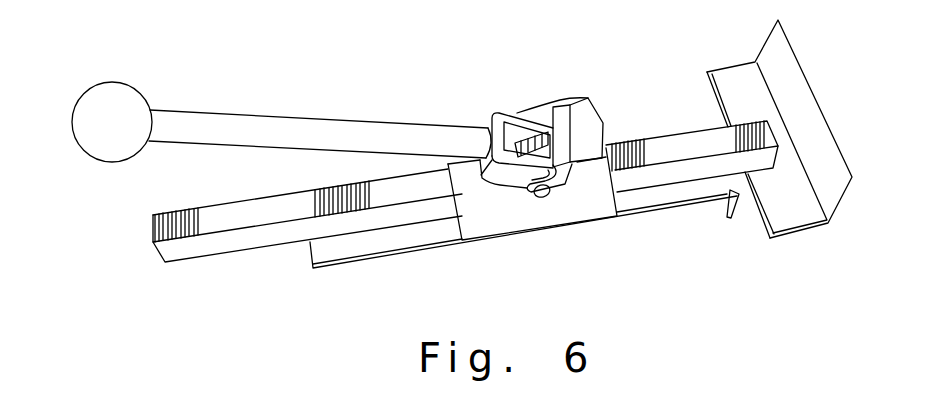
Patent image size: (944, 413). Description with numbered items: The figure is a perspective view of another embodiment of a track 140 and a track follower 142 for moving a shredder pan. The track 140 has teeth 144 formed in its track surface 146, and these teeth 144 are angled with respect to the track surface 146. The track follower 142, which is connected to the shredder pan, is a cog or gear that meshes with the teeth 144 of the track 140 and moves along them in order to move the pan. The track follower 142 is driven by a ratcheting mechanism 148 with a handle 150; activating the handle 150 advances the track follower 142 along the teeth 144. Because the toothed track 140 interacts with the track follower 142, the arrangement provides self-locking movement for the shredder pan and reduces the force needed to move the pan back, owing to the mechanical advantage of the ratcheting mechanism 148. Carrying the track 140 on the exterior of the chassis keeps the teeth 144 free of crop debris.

The track 140 is at (462, 193).
The track follower 142 is at (560, 133).
The teeth 144 is at (318, 192).
The track surface 146 is at (378, 213).
The ratcheting mechanism 148 is at (481, 100).
The handle 150 is at (303, 127).